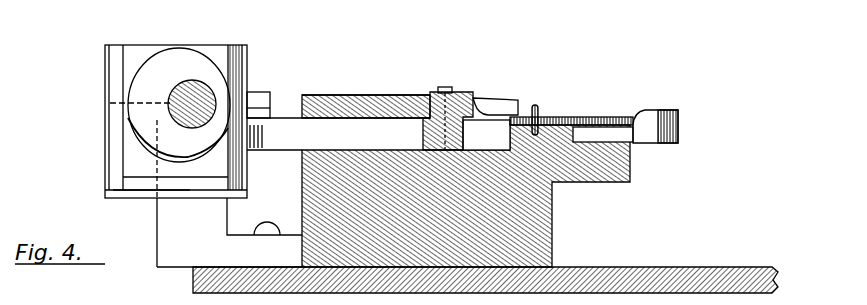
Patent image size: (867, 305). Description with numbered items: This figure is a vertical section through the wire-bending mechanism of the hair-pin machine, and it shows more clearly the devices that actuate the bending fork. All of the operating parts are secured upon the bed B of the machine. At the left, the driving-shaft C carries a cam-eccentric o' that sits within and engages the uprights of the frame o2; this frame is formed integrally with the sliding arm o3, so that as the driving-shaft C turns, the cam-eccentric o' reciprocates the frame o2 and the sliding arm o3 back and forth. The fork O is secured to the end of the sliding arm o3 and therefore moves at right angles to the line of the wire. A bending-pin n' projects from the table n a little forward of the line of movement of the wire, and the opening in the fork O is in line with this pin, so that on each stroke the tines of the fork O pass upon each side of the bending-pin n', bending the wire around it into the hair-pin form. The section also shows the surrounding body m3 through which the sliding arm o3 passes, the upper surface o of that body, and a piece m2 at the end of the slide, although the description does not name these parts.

The bed B is at (641, 267).
The block m3 is at (467, 181).
The sliding arm o3 is at (338, 134).
The fork O is at (472, 96).
The block top o is at (366, 85).
The bending-pin n' is at (546, 114).
The table n is at (571, 111).
The stop m2 is at (678, 120).
The frame o2 is at (187, 121).
The driving-shaft C is at (179, 96).
The cam-eccentric o' is at (163, 112).